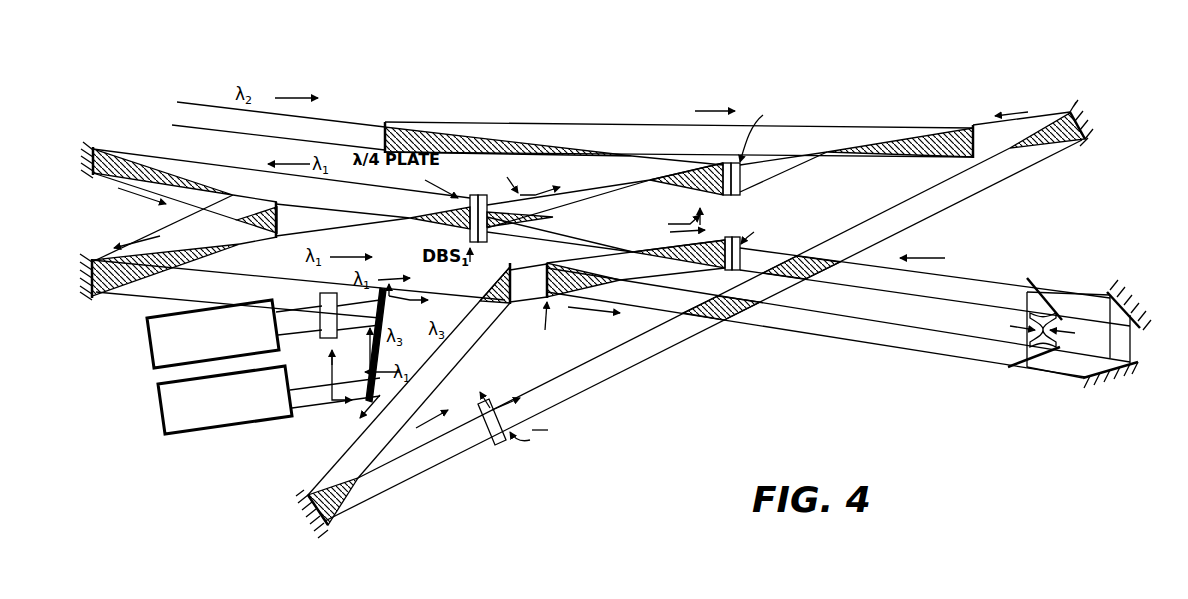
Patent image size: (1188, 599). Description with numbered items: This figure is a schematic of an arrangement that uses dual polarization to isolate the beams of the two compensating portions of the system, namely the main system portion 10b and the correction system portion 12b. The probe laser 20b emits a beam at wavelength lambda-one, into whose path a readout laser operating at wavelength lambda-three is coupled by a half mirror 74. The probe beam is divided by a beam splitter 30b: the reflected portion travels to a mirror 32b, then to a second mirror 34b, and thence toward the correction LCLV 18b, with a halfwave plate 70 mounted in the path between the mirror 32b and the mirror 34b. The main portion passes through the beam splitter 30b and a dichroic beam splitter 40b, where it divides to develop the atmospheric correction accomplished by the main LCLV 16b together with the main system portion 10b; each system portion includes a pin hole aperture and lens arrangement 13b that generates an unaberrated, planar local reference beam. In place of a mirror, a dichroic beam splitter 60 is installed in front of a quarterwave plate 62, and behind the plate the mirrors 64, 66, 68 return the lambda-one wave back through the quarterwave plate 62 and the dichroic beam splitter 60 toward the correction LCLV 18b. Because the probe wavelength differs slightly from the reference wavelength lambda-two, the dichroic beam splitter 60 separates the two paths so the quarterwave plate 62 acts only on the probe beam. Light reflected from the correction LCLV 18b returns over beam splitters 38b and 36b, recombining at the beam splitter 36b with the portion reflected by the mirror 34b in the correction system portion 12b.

The main system portion 10b is at (1047, 283).
The correction system portion 12b is at (866, 110).
The pin hole aperture and lens arrangement 13b is at (1008, 320).
The main LCLV 16b is at (736, 272).
The correction LCLV 18b is at (726, 162).
The probe laser 20b is at (248, 310).
The beam splitter 30b is at (510, 288).
The mirror 32b is at (330, 520).
The second mirror 34b is at (1088, 132).
The beam splitter 36b is at (970, 126).
The beam splitter 38b is at (388, 122).
The dichroic beam splitter 40b is at (825, 308).
The dichroic beam splitter 60 is at (484, 195).
The quarterwave plate 62 is at (474, 195).
The mirror 64 is at (93, 155).
The mirror 66 is at (281, 212).
The mirror 68 is at (88, 296).
The halfwave plate 70 is at (497, 446).
The half mirror 74 is at (340, 332).